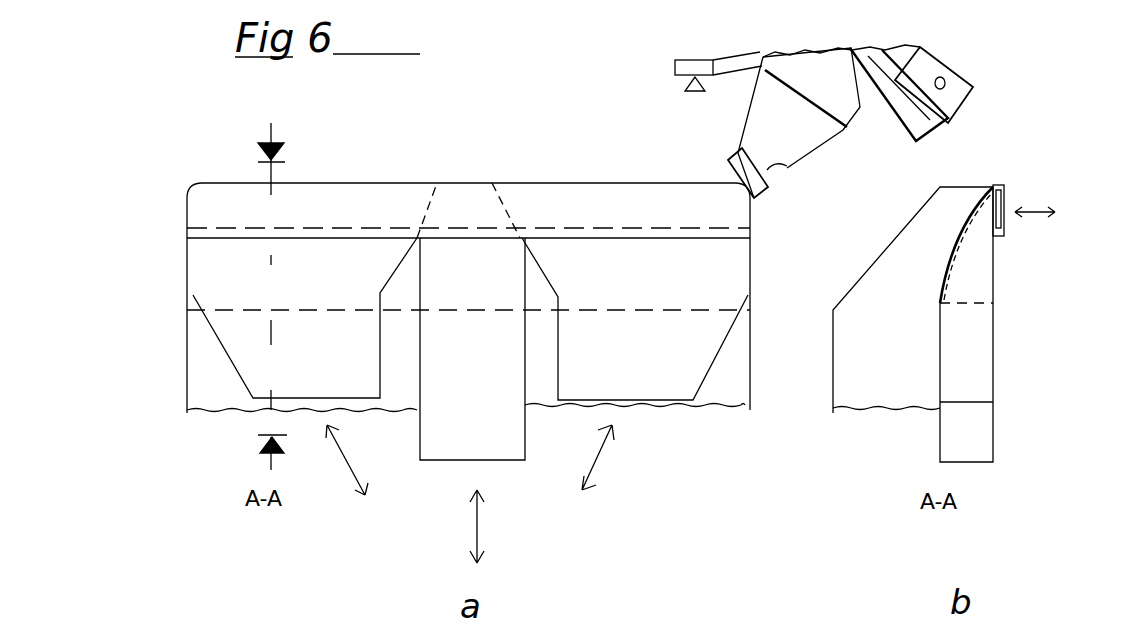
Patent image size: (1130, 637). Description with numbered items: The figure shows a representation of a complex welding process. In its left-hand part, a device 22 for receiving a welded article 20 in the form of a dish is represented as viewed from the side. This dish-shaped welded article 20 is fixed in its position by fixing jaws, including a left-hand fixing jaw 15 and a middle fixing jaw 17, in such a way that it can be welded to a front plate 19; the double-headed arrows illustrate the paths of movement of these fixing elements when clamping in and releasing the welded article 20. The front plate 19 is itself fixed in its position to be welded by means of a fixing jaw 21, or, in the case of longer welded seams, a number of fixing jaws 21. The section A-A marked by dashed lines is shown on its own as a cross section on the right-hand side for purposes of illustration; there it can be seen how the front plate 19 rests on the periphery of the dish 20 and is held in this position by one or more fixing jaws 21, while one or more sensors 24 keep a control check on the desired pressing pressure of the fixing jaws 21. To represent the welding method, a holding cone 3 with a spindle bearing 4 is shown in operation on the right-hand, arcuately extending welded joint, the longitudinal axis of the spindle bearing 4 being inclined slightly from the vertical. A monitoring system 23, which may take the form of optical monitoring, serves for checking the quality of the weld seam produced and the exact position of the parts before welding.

The holding cone 3 is at (827, 147).
The spindle bearing 4 is at (770, 182).
The left-hand fixing jaw 15 is at (253, 370).
The middle fixing jaw 17 is at (488, 442).
The front plate 19 is at (1004, 193).
The welded article in the form of a dish 20 is at (950, 272).
The fixing jaw 21 is at (617, 212).
The device for receiving a welded article 22 is at (732, 395).
The monitoring system 23 is at (675, 67).
The sensor 24 is at (1000, 188).